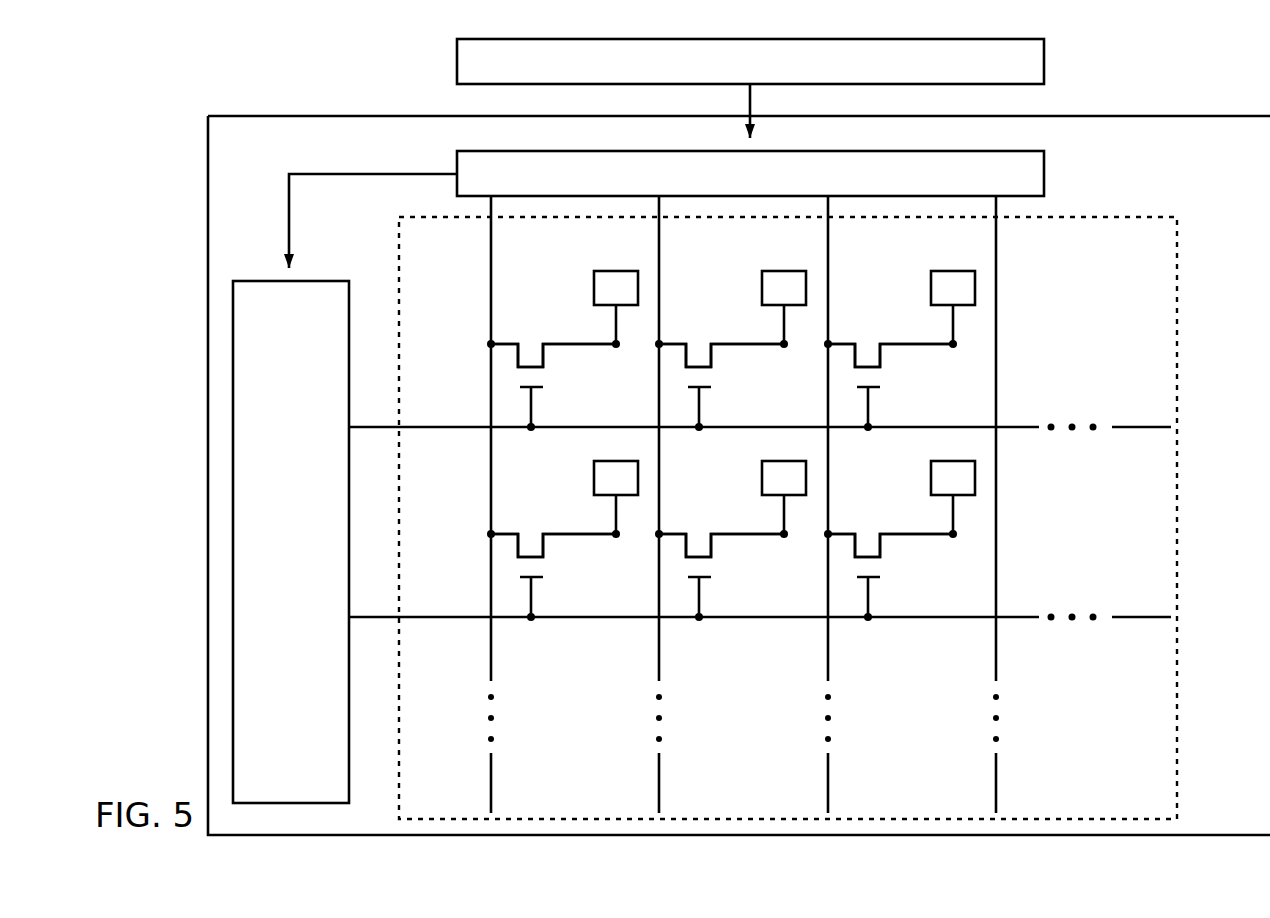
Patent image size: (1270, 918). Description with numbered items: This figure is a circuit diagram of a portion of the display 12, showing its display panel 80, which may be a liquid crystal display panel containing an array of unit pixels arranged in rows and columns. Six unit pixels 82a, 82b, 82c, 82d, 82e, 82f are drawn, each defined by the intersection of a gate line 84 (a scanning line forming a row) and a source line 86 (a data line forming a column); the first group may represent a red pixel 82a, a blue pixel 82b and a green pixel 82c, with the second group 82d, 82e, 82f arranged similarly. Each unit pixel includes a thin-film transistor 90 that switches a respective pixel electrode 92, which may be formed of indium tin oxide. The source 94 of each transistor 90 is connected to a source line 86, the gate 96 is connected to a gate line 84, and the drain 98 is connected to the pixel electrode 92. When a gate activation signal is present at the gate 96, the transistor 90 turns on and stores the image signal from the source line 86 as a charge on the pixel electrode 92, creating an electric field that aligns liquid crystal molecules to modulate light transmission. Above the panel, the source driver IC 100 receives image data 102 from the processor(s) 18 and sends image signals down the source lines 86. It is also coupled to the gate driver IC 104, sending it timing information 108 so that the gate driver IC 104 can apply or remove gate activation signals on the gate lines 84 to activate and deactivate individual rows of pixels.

The display 12 is at (1100, 116).
The processor(s) 18 is at (884, 39).
The source driver integrated circuit 100 is at (884, 151).
The image data 102 is at (753, 109).
The timing information 108 is at (328, 173).
The gate driver IC 104 is at (328, 281).
The display panel 80 is at (1135, 218).
The unit pixel 82a is at (508, 296).
The unit pixel 82b is at (674, 266).
The unit pixel 82c is at (843, 266).
The unit pixel 82d is at (508, 466).
The unit pixel 82e is at (676, 466).
The unit pixel 82f is at (845, 466).
The gate lines 84 is at (420, 427).
The source lines 86 is at (493, 775).
The thin-film transistor 90 is at (551, 379).
The pixel electrode 92 is at (595, 271).
The source 94 is at (496, 342).
The gate 96 is at (538, 424).
The drain 98 is at (613, 342).